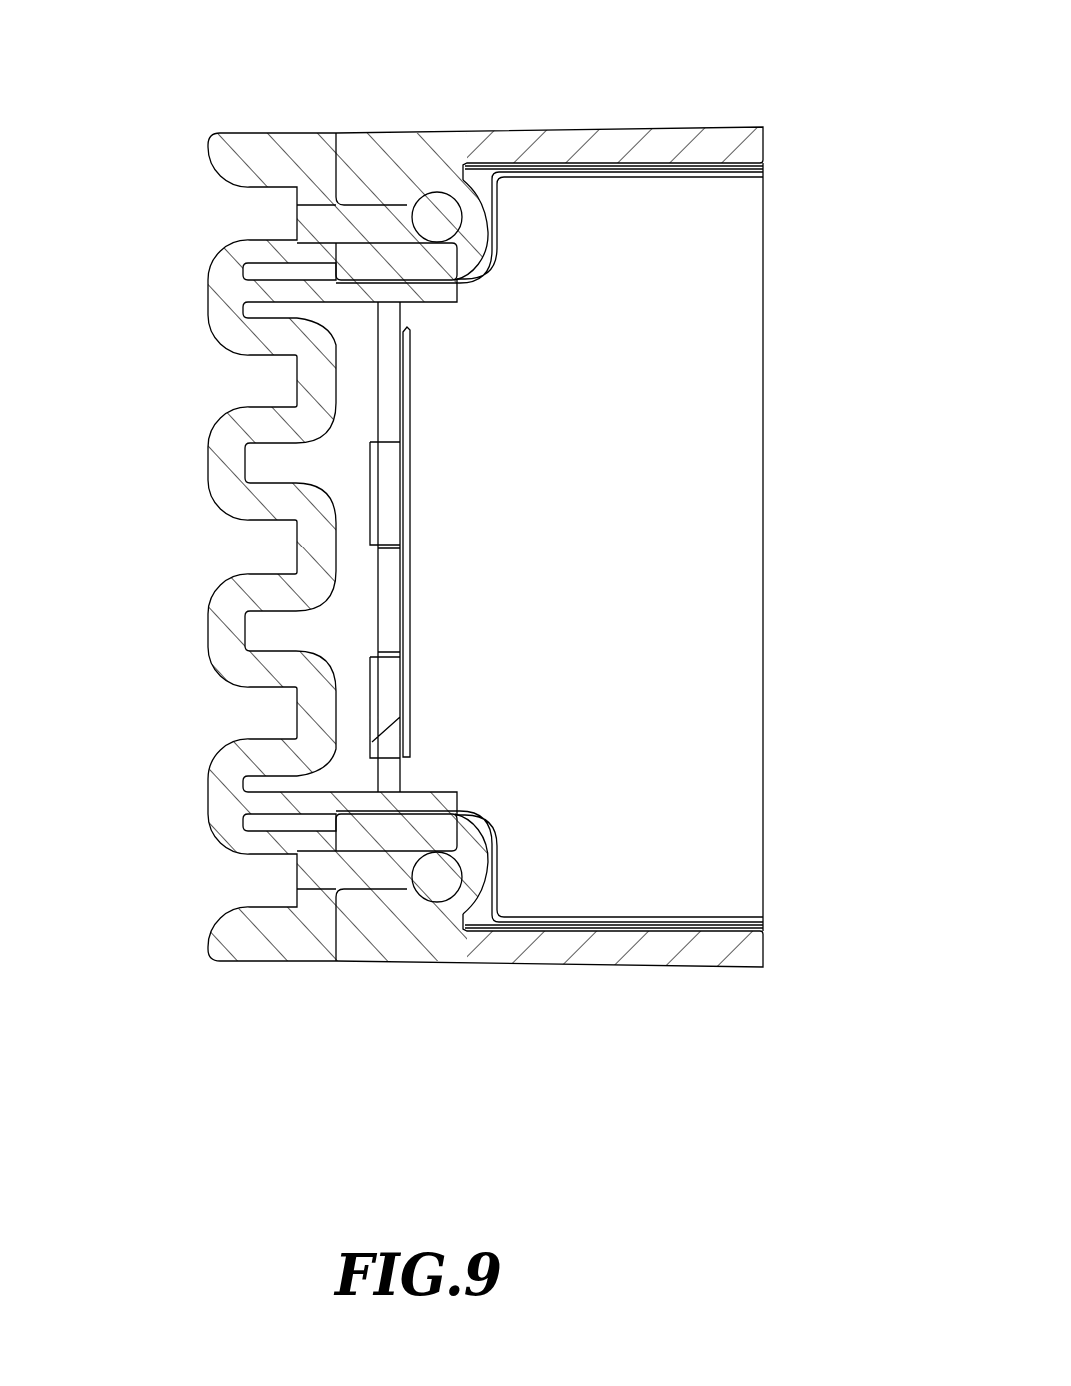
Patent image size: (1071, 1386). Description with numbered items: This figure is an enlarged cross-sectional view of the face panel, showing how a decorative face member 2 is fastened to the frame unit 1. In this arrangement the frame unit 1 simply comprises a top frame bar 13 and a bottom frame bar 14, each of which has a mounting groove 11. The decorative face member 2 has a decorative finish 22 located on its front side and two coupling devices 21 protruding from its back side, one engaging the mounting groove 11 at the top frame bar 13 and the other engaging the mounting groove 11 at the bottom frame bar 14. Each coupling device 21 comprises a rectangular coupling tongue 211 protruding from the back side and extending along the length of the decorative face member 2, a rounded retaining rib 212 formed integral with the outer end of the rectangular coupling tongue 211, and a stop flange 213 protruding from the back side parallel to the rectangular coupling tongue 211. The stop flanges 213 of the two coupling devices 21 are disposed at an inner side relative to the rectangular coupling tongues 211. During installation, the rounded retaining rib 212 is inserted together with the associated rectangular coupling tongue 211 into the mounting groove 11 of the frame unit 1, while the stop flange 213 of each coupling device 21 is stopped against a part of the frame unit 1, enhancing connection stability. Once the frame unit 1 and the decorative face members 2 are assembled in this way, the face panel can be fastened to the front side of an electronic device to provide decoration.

The frame unit 1 is at (530, 521).
The decorative face member 2 is at (231, 535).
The mounting groove 11 is at (465, 262).
The top frame bar 13 is at (567, 138).
The bottom frame bar 14 is at (575, 947).
The coupling device 21 is at (386, 480).
The decorative finish 22 is at (215, 420).
The rectangular coupling tongue 211 is at (363, 208).
The rounded retaining rib 212 is at (430, 201).
The stop flange 213 is at (420, 295).